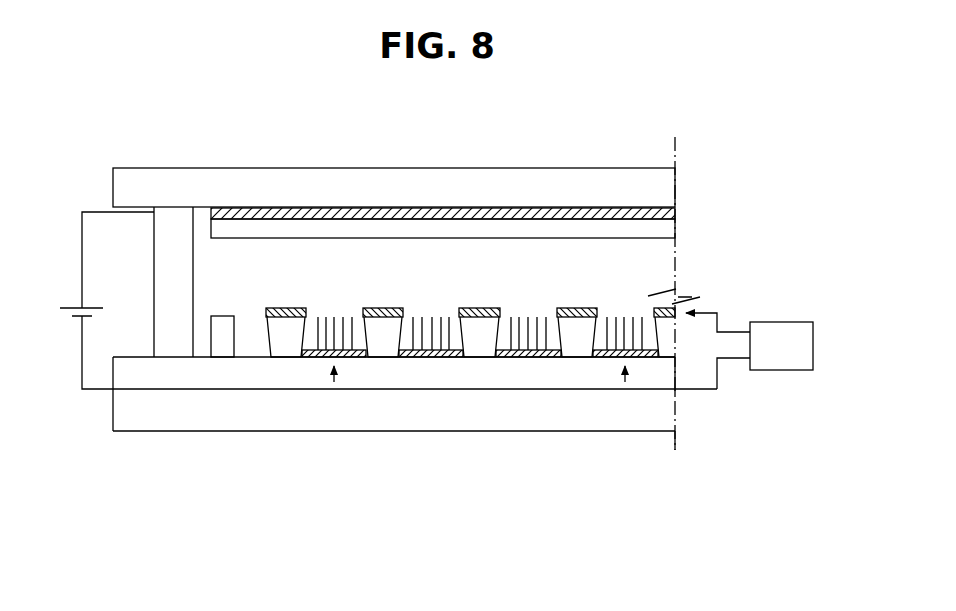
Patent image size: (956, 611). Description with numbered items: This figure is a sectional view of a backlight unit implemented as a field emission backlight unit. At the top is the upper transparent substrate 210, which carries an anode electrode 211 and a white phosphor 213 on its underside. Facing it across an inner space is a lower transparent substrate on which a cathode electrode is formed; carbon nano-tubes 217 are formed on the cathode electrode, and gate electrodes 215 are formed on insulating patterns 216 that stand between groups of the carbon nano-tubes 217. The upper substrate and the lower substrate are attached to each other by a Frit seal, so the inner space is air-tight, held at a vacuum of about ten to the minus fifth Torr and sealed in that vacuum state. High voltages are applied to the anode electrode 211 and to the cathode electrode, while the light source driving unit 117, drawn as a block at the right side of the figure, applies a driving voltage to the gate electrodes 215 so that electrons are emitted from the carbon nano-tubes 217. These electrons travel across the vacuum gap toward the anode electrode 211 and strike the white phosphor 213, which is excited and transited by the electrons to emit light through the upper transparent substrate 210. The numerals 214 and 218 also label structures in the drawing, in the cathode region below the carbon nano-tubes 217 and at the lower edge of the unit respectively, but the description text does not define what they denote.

The upper transparent substrate 210 is at (667, 188).
The anode electrode 211 is at (671, 211).
The white phosphor 213 is at (668, 230).
The cathode electrode 214 is at (427, 277).
The gate electrodes 215 is at (574, 307).
The insulating patterns 216 is at (479, 327).
The carbon nano-tubes 217 is at (334, 320).
The cathode substrate 218 is at (516, 422).
The light source driving unit 117 is at (765, 356).